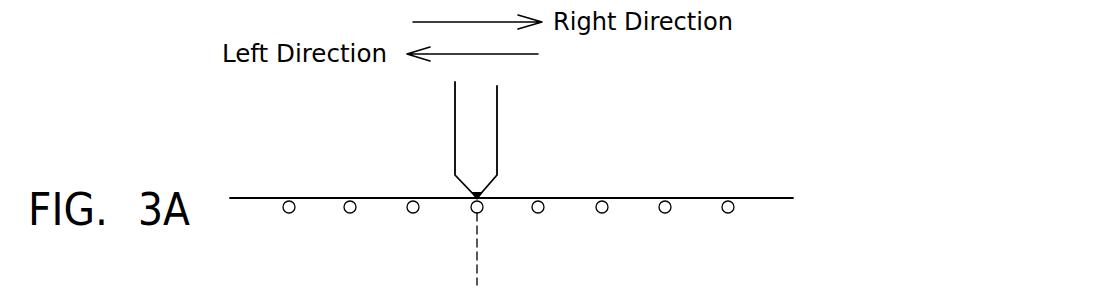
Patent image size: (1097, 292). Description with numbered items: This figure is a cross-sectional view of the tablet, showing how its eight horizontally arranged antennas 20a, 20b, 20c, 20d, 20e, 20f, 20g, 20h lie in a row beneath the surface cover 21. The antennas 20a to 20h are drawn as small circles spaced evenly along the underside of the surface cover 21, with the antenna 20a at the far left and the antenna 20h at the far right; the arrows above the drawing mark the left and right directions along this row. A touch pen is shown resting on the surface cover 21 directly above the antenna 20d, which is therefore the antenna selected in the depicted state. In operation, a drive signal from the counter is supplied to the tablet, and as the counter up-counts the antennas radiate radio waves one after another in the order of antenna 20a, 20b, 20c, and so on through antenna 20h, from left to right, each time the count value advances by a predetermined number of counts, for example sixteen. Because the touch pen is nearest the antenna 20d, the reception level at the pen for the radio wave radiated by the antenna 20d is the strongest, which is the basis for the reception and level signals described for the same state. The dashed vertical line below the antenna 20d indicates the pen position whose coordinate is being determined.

The antenna 20a is at (285, 213).
The antenna 20b is at (349, 213).
The antenna 20c is at (413, 213).
The antenna 20d is at (482, 213).
The antenna 20e is at (543, 213).
The antenna 20f is at (607, 213).
The antenna 20g is at (670, 213).
The antenna 20h is at (733, 213).
The surface cover 21 is at (578, 211).